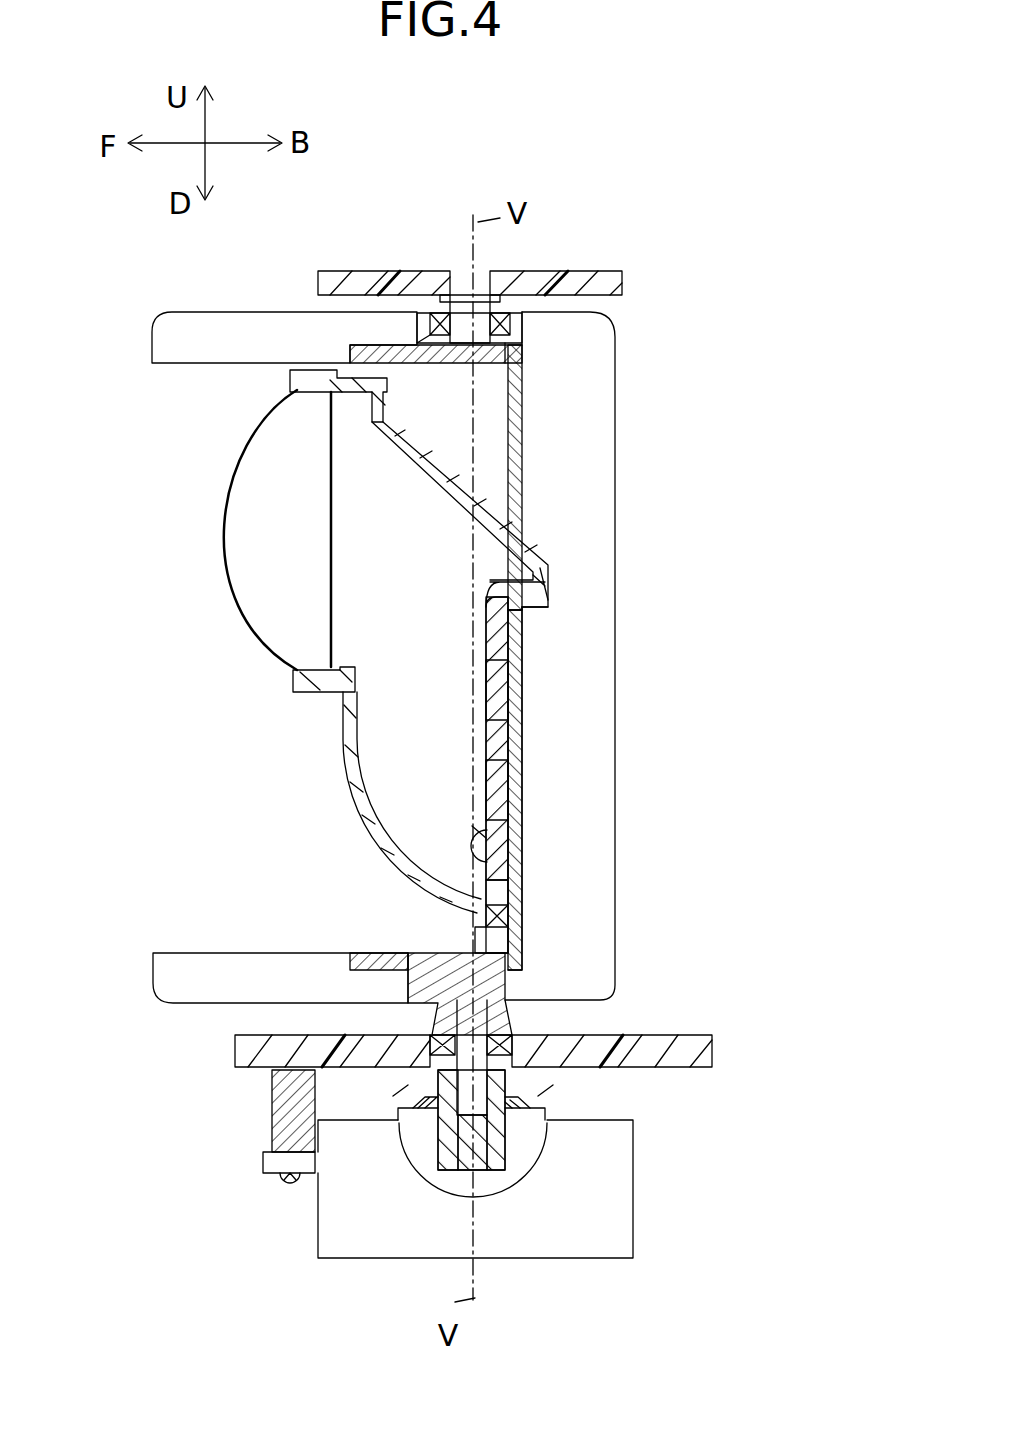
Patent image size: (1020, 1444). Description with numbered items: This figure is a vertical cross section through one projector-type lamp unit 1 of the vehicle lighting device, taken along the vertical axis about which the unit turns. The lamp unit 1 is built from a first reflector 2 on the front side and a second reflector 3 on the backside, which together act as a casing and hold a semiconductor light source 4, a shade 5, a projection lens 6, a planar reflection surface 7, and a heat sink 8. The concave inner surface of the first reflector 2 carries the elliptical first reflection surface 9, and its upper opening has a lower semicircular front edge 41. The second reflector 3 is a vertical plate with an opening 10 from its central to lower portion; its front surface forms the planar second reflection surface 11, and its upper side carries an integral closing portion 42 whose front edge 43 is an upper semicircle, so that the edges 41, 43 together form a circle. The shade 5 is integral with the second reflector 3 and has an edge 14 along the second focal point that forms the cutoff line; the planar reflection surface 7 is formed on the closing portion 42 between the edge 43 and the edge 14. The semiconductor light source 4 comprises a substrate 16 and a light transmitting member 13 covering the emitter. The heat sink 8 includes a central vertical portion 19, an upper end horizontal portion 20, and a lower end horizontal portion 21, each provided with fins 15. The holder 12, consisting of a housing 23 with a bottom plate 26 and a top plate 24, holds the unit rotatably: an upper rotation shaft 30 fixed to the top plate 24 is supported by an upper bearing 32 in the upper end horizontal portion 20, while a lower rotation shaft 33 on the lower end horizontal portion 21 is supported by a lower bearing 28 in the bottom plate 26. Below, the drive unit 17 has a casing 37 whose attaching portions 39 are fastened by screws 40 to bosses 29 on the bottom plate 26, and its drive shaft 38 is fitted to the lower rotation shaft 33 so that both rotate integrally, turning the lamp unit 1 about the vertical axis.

The lamp unit 1 is at (255, 534).
The first reflector 2 is at (358, 802).
The second reflector 3 is at (584, 887).
The semiconductor light source 4 is at (470, 830).
The shade 5 is at (587, 776).
The projection lens 6 is at (230, 490).
The planar reflection surface 7 is at (520, 502).
The heat sink 8 is at (409, 746).
The first reflection surface 9 is at (352, 768).
The opening 10 is at (520, 790).
The second reflection surface 11 is at (488, 668).
The holder 12 is at (522, 647).
The light transmitting member 13 is at (482, 845).
The edge 14 is at (601, 482).
The fins 15 is at (240, 330).
The substrate 16 is at (500, 832).
The drive unit 17 is at (537, 1200).
The central vertical portion 19 is at (500, 703).
The upper end horizontal portion 20 is at (190, 312).
The lower end horizontal portion 21 is at (232, 952).
The housing 23 is at (712, 1060).
The top plate 24 is at (594, 270).
The bottom plate 26 is at (240, 1050).
The lower bearing 28 is at (505, 1025).
The bosses 29 is at (275, 1130).
The upper rotation shaft 30 is at (464, 270).
The upper bearing 32 is at (430, 320).
The lower rotation shaft 33 is at (515, 1105).
The casing 37 is at (400, 1258).
The drive shaft 38 is at (490, 1160).
The attaching portions 39 is at (280, 1170).
The screws 40 is at (290, 1185).
The front edge 41 is at (295, 679).
The closing portion 42 is at (505, 510).
The edge 43 is at (295, 378).